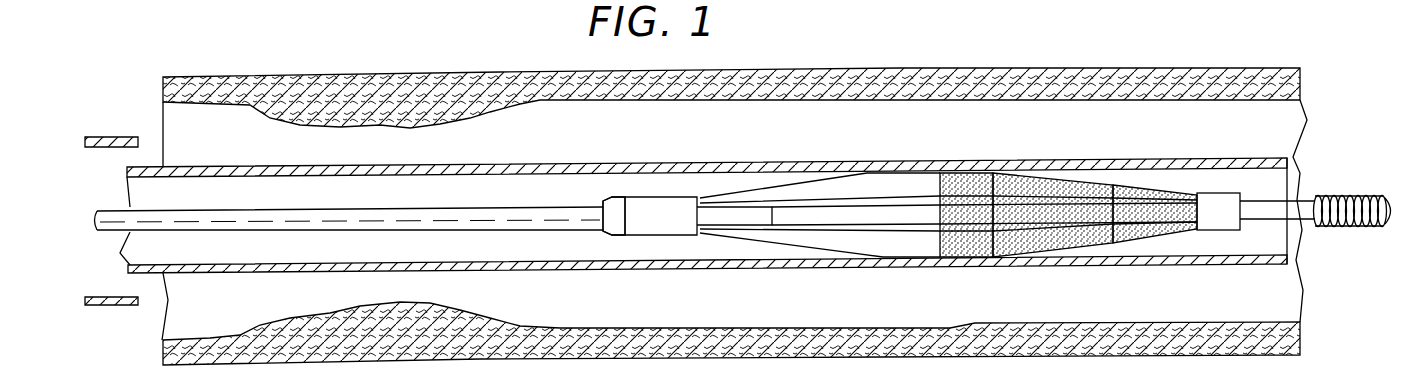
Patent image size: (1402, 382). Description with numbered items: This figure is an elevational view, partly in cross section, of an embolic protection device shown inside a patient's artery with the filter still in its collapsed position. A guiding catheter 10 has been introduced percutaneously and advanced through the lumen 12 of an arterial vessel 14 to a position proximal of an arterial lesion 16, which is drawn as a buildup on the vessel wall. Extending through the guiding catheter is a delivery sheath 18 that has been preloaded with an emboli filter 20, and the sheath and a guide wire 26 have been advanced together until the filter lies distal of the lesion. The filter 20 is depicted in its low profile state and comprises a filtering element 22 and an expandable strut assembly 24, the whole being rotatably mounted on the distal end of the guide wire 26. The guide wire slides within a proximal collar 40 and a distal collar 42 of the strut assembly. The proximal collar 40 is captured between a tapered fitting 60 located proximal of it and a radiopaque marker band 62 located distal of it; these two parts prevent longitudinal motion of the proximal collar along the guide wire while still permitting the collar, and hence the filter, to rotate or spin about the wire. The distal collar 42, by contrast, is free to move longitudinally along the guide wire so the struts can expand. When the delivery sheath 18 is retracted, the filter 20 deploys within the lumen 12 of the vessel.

The guiding catheter 10 is at (113, 136).
The lumen 12 is at (210, 337).
The arterial vessel 14 is at (262, 77).
The arterial lesion 16 is at (287, 122).
The delivery sheath 18 is at (550, 164).
The emboli filter 20 is at (920, 139).
The filtering element 22 is at (1142, 190).
The expandable strut assembly 24 is at (820, 180).
The guide wire 26 is at (1268, 206).
The proximal collar 40 is at (662, 190).
The distal collar 42 is at (1215, 231).
The tapered fitting 60 is at (603, 236).
The radiopaque marker band 62 is at (753, 213).